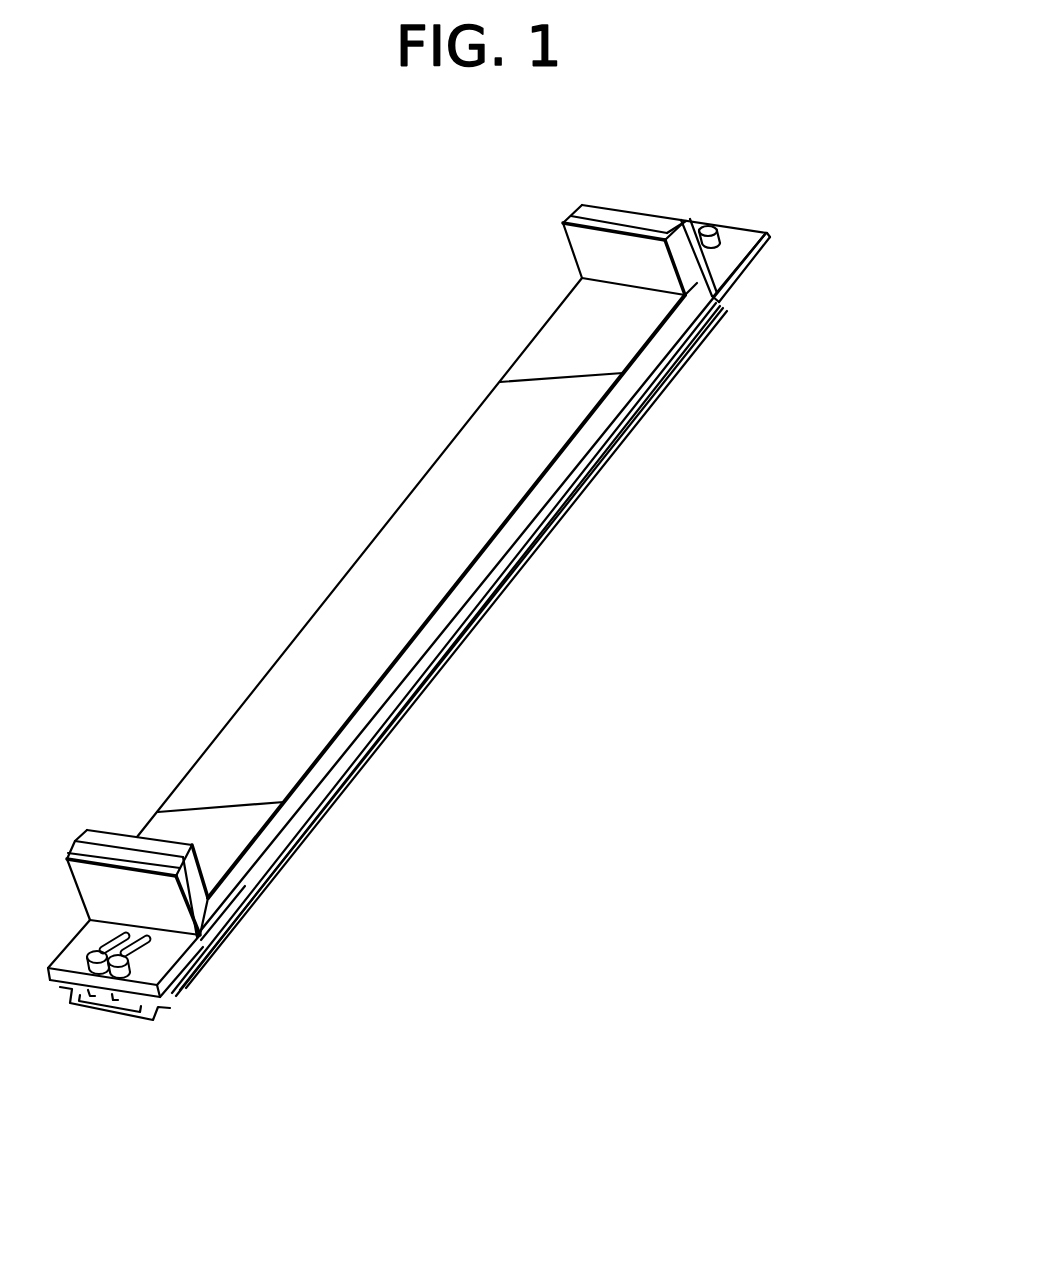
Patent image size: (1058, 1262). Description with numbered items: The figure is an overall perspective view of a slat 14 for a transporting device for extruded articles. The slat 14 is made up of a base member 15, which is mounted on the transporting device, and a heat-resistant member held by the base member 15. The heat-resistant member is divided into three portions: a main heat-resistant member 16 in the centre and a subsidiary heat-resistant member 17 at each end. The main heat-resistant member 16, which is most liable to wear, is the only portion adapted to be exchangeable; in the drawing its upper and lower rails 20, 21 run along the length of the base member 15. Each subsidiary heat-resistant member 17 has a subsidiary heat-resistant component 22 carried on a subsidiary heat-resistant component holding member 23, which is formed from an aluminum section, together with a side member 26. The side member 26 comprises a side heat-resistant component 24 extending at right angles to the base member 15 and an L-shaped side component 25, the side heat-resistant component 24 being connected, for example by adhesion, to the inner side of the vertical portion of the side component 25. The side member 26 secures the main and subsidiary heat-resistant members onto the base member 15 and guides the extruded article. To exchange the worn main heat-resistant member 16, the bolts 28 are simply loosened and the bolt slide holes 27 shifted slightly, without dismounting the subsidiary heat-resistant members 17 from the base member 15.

The slat 14 is at (330, 592).
The base member 15 is at (362, 768).
The main heat-resistant member 16 is at (469, 613).
The subsidiary heat-resistant member 17 is at (556, 579).
The upper rail 20 is at (438, 620).
The lower rail 21 is at (413, 672).
The subsidiary heat-resistant component 22 is at (690, 313).
The subsidiary heat-resistant component holding member 23 is at (667, 360).
The side heat-resistant component 24 is at (662, 217).
The side component 25 is at (767, 233).
The side member 26 is at (722, 230).
The bolt slide holes 27 is at (145, 951).
The bolts 28 is at (135, 988).